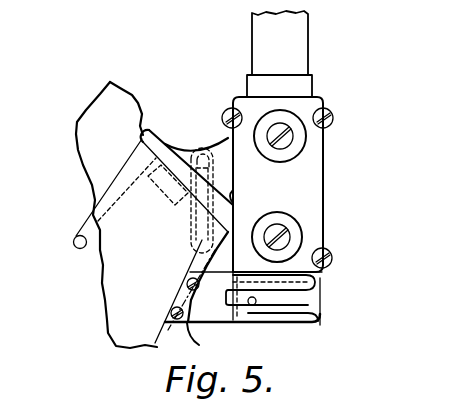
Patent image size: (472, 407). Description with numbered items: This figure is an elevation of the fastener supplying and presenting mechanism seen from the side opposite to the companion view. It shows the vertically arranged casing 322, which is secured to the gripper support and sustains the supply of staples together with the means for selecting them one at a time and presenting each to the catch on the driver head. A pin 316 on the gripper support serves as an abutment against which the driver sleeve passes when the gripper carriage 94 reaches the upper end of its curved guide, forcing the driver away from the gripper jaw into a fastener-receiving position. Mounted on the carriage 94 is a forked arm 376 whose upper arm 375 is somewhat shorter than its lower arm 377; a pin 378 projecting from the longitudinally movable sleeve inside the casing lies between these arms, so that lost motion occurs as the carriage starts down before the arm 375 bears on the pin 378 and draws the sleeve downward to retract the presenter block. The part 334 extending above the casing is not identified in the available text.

The gripper carriage 94 is at (110, 283).
The pin 316 is at (73, 242).
The casing 322 is at (323, 188).
The shaft 334 is at (308, 53).
The upper arm 375 is at (310, 291).
The forked arm 376 is at (207, 314).
The lower arm 377 is at (318, 325).
The pin 378 is at (255, 305).